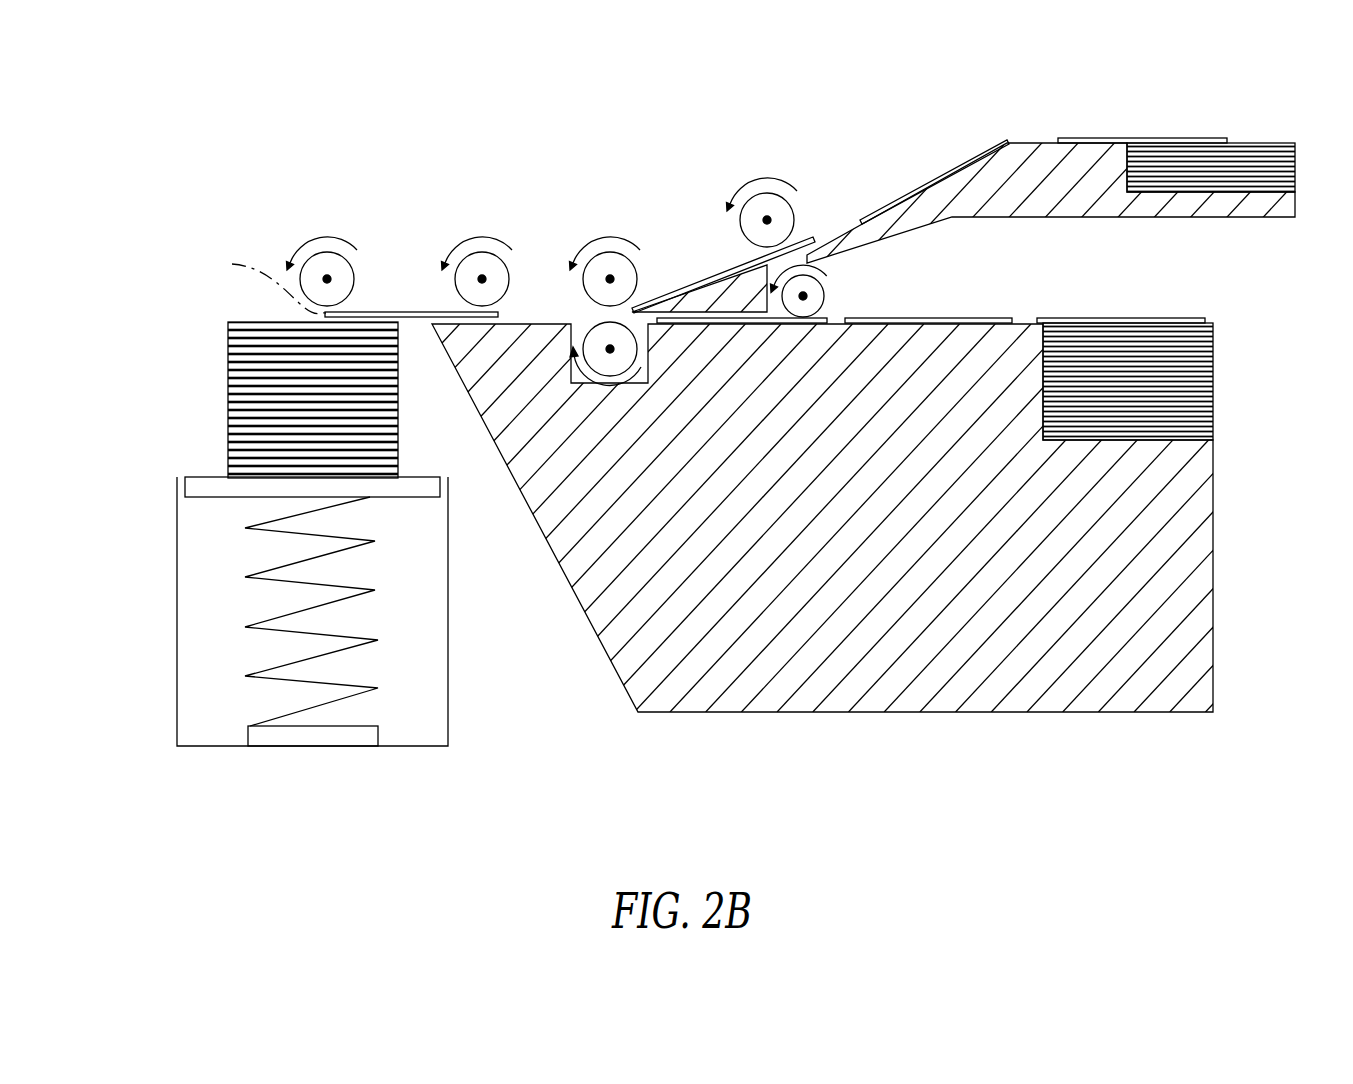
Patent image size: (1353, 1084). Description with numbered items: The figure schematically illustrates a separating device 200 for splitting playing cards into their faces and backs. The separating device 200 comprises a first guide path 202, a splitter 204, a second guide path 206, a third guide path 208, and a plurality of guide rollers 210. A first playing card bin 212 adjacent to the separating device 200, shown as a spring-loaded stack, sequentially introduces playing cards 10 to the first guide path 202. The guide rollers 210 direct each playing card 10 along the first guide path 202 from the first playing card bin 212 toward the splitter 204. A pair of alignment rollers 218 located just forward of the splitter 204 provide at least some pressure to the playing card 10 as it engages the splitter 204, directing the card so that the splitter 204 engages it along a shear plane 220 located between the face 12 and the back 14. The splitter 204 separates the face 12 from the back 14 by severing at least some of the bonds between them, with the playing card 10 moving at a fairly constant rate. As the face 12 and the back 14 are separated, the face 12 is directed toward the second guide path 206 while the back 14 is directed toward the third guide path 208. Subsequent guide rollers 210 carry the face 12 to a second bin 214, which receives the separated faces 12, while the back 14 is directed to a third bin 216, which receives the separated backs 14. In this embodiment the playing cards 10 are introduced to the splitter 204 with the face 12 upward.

The separating device 200 is at (288, 128).
The playing card 10 is at (215, 318).
The face 12 is at (410, 312).
The back 14 is at (412, 318).
The first guide path 202 is at (527, 323).
The splitter 204 is at (643, 305).
The second guide path 206 is at (837, 232).
The third guide path 208 is at (836, 320).
The guide rollers 210 is at (357, 268).
The first playing card bin 212 is at (177, 610).
The second bin 214 is at (1170, 217).
The third bin 216 is at (1163, 440).
The alignment rollers 218 is at (573, 278).
The shear plane 220 is at (259, 282).